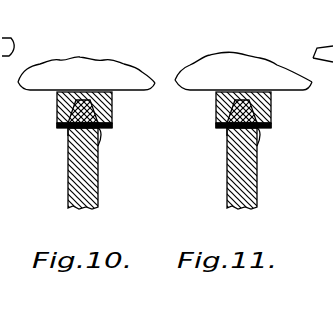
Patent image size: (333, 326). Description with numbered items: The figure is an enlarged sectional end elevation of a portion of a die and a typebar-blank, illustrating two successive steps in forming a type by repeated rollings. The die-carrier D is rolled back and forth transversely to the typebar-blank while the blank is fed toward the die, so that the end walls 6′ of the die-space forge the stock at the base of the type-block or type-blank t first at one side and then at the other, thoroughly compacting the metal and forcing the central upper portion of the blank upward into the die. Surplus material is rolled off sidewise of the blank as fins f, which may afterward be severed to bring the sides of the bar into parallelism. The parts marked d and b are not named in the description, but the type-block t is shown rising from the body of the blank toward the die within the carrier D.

In FIG. 10, the die-carrier D is at (138, 72).
In FIG. 11, the die-carrier D is at (243, 63).
In FIG. 10, the collar d is at (57, 107).
In FIG. 11, the collar d is at (227, 109).
In FIG. 10, the end walls of the die-space 6′ is at (59, 123).
In FIG. 11, the end walls of the die-space 6′ is at (238, 124).
In FIG. 10, the fin f is at (60, 129).
In FIG. 11, the fin f is at (232, 150).
In FIG. 10, the type-block t is at (100, 135).
In FIG. 11, the type-block t is at (278, 152).
In FIG. 10, the bolt shank b is at (97, 194).
In FIG. 11, the bolt shank b is at (253, 168).